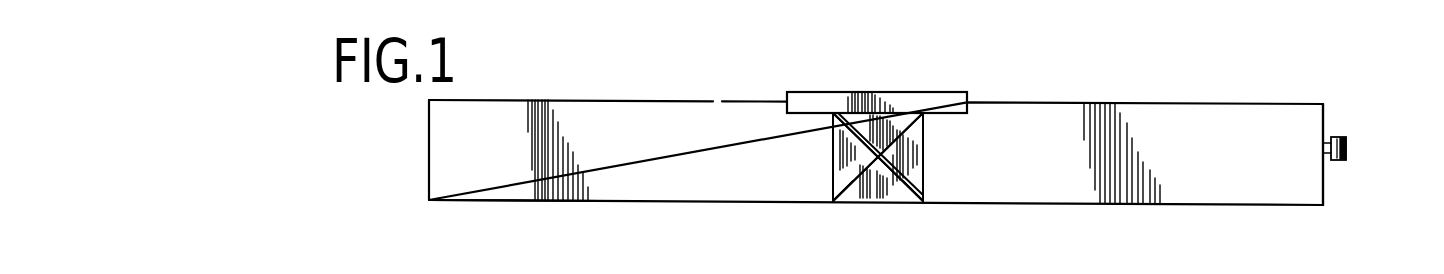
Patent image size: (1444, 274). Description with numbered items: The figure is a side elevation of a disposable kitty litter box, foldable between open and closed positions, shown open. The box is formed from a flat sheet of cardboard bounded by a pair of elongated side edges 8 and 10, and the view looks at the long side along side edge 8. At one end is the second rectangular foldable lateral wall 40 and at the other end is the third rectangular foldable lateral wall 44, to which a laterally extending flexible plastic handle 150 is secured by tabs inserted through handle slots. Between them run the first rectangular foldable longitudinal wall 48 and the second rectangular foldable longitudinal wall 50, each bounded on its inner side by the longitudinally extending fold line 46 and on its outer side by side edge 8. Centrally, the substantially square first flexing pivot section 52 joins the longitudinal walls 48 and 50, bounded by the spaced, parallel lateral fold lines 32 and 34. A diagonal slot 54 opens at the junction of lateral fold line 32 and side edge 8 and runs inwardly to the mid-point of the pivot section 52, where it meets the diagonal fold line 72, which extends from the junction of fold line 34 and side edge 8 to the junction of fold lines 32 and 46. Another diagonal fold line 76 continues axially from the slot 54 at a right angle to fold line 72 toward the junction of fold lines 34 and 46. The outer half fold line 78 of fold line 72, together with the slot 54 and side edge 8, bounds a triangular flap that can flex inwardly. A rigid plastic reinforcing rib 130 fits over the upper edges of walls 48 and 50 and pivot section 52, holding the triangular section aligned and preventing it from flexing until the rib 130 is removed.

The side edge 8 is at (643, 100).
The side edge 10 is at (781, 269).
The reinforcing rib 130 is at (863, 92).
The diagonal slot 54 is at (845, 132).
The lateral fold line 32 is at (832, 158).
The outer half fold line 78 is at (905, 135).
The lateral fold line 34 is at (923, 170).
The diagonal fold line 72 is at (842, 187).
The first flexing pivot section 52 is at (865, 203).
The diagonal fold line 76 is at (897, 186).
The second rectangular foldable lateral wall 40 is at (428, 155).
The longitudinal fold line 46 is at (474, 201).
The first rectangular foldable longitudinal wall 48 is at (633, 168).
The second rectangular foldable longitudinal wall 50 is at (1190, 172).
The third rectangular foldable lateral wall 44 is at (1323, 180).
The flexible plastic handle 150 is at (1347, 142).